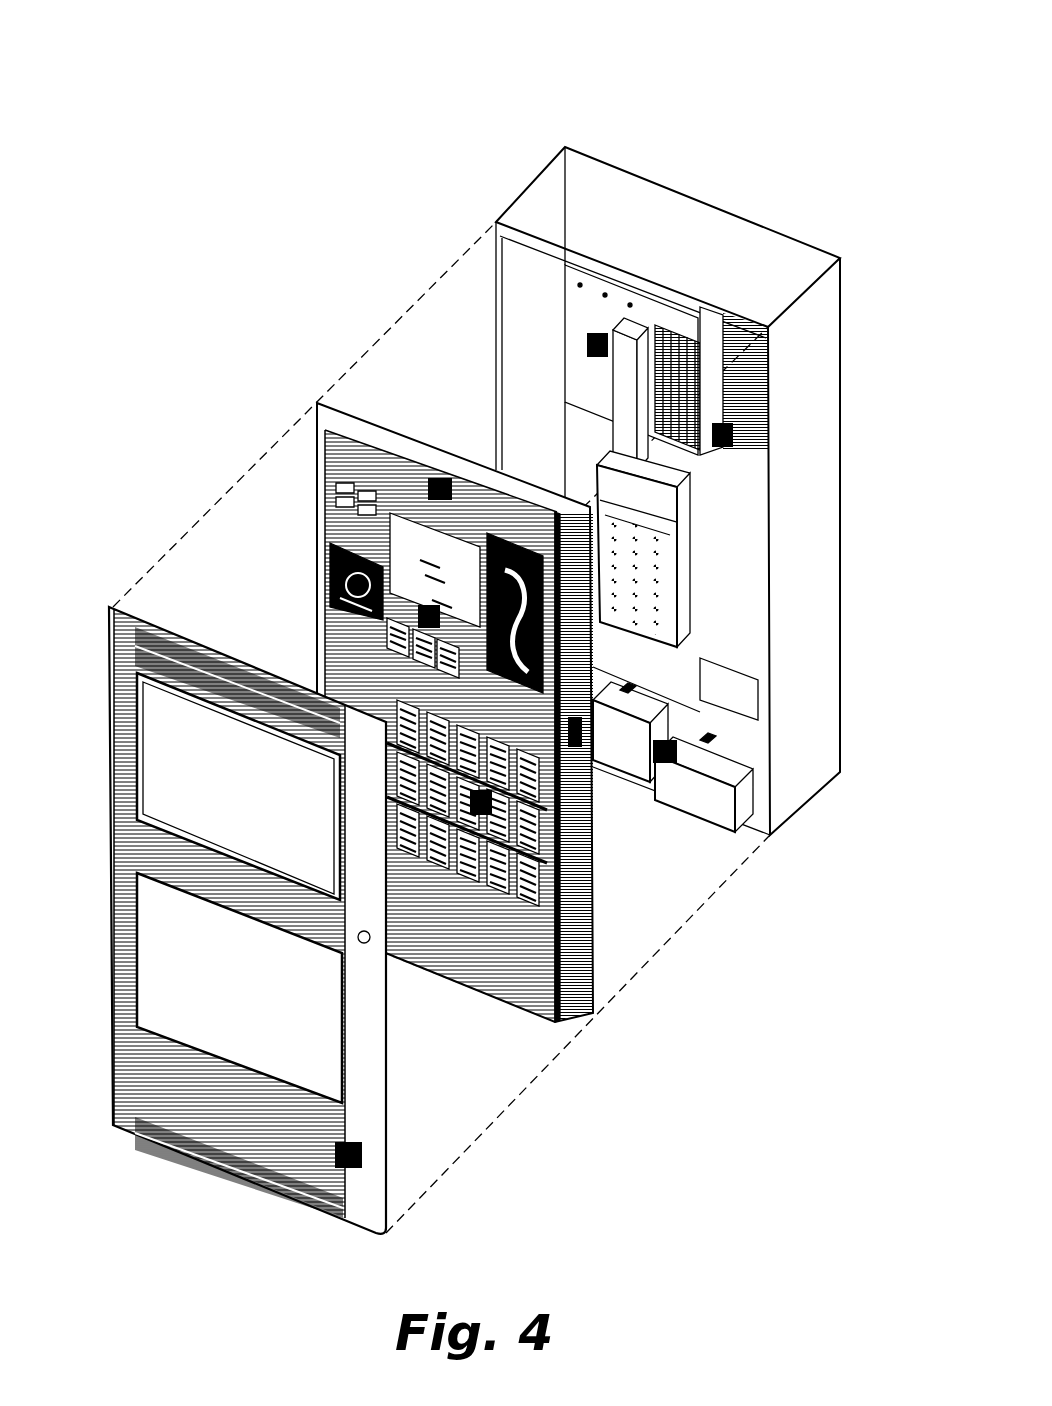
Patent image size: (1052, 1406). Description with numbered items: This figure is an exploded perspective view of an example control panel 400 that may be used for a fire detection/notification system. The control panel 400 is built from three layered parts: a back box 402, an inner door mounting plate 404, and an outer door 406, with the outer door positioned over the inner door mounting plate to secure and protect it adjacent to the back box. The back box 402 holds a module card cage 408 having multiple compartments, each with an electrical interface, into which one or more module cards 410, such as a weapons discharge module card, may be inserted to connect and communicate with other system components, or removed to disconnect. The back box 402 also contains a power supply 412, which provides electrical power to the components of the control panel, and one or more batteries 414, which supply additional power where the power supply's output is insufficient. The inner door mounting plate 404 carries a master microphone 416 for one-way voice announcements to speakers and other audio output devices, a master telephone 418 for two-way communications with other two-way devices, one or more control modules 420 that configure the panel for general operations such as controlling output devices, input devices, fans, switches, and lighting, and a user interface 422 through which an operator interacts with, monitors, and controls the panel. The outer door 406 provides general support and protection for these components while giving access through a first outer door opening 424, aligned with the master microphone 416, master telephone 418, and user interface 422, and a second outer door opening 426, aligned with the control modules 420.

The control panel 400 is at (143, 73).
The back box 402 is at (533, 181).
The inner door mounting plate 404 is at (319, 404).
The outer door 406 is at (111, 609).
The module card cage 408 is at (735, 440).
The module cards 410 is at (598, 340).
The power supply 412 is at (676, 532).
The batteries 414 is at (677, 763).
The master microphone 416 is at (332, 550).
The master telephone 418 is at (547, 565).
The control modules 420 is at (492, 813).
The user interface 422 is at (440, 627).
The first outer door opening 424 is at (180, 762).
The second outer door opening 426 is at (180, 972).